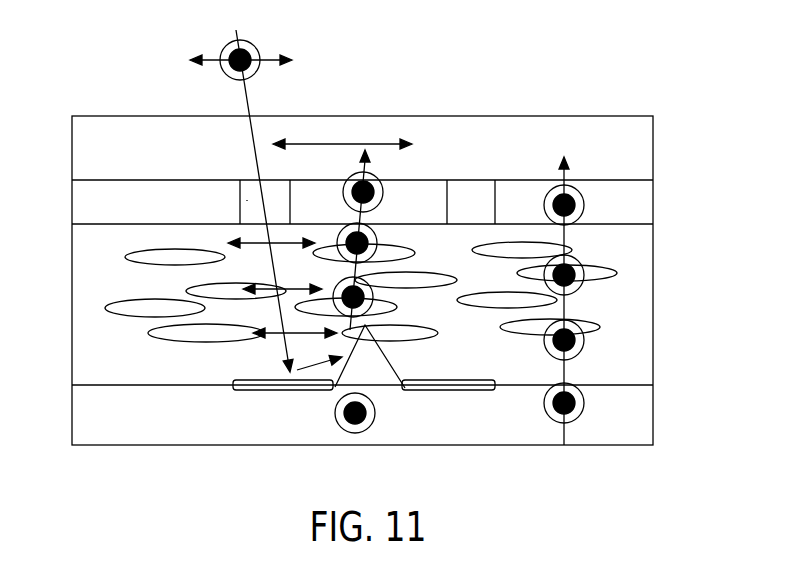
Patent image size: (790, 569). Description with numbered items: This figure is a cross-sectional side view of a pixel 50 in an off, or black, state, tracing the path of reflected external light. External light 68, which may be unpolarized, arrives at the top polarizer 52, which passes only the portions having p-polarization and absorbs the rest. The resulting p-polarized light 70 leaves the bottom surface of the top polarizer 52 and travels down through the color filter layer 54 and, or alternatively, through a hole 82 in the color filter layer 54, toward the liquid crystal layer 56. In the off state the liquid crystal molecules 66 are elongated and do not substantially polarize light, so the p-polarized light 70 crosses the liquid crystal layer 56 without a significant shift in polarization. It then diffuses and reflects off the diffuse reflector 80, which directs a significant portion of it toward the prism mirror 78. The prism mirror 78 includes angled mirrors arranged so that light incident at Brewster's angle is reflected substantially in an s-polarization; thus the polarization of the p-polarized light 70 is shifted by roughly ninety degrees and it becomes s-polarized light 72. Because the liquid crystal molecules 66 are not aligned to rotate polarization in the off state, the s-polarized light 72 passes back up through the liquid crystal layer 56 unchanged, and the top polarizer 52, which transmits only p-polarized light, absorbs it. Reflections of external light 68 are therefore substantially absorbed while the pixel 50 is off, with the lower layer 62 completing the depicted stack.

The pixel 50 is at (512, 75).
The top polarizer 52 is at (645, 142).
The color filter layer 54 is at (650, 208).
The liquid crystal layer 56 is at (78, 323).
The base layer 62 is at (78, 423).
The liquid crystal molecules 66 is at (600, 328).
The external light 68 is at (226, 46).
The p-polarized light 70 is at (262, 240).
The s-polarized light 72 is at (365, 224).
The prism mirror 78 is at (336, 387).
The diffuse reflector 80 is at (263, 392).
The hole 82 is at (247, 200).